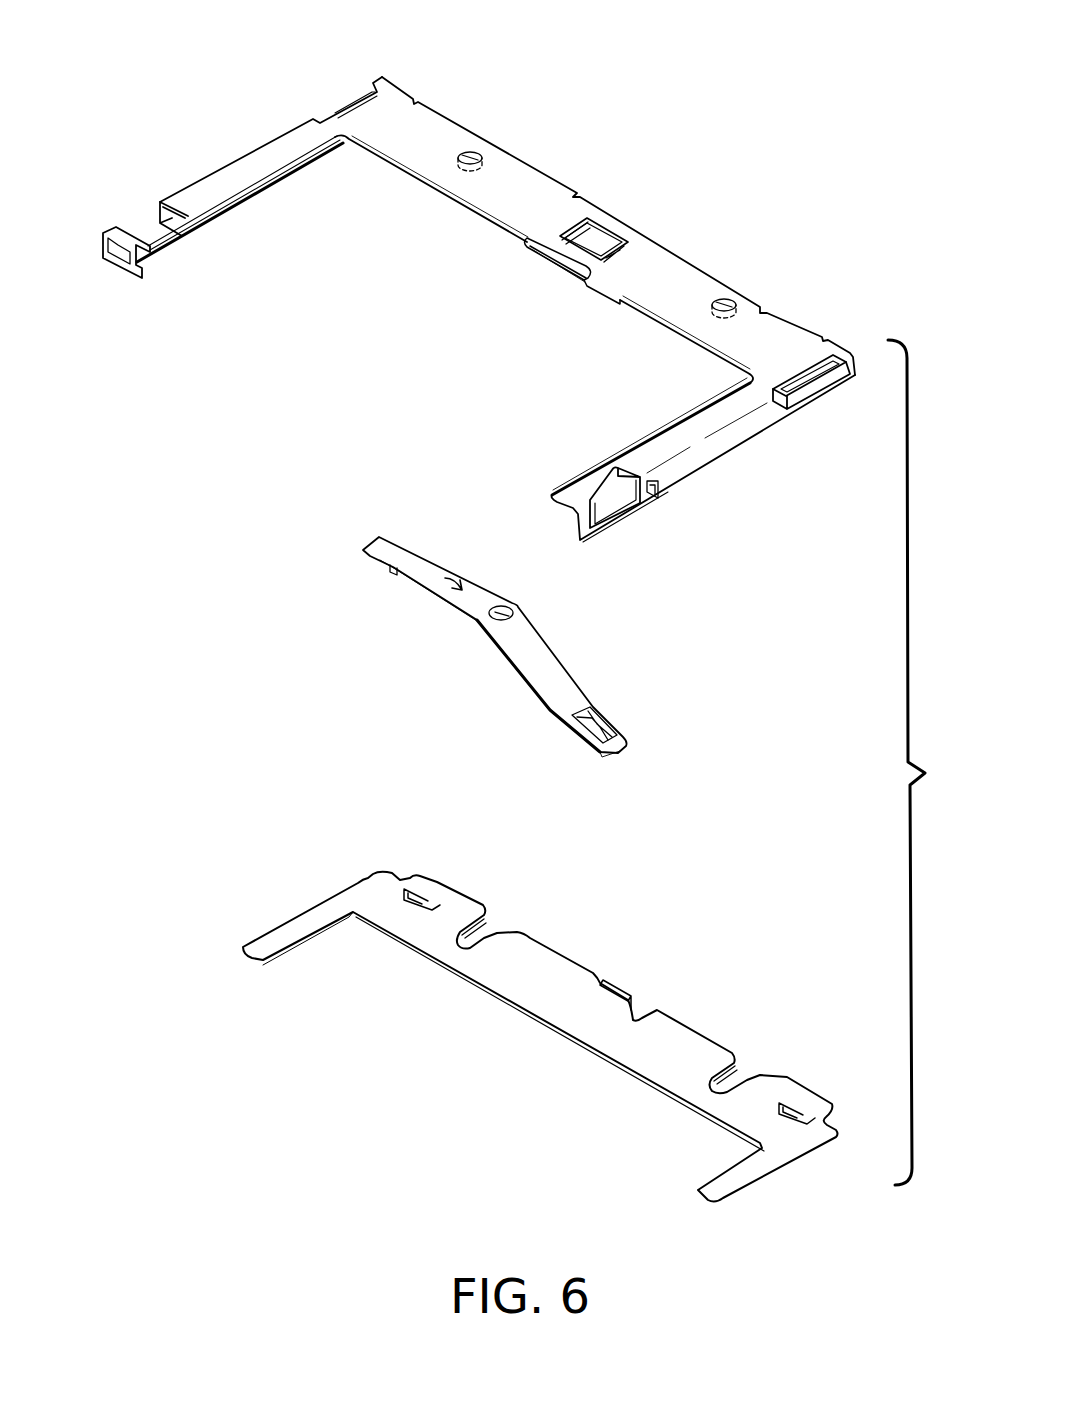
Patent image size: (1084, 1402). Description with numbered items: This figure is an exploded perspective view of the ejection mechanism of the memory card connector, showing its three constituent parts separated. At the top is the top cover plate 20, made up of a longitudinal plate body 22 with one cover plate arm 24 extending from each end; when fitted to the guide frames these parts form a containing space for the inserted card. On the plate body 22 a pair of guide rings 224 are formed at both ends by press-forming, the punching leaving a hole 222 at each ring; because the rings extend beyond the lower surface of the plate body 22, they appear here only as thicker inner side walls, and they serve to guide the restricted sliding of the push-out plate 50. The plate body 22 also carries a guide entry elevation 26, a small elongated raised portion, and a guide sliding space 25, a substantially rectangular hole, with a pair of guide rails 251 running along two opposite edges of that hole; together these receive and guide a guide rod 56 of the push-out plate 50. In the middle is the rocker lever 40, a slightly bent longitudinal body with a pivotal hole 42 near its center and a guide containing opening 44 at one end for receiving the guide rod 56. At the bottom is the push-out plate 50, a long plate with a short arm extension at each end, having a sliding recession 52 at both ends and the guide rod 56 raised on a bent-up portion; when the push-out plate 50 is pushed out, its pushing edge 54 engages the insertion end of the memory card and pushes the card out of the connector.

The top cover plate 20 is at (722, 130).
The plate body 22 is at (503, 160).
The cover plate arm 24 is at (275, 152).
The guide sliding space 25 is at (587, 240).
The guide entry elevation 26 is at (549, 252).
The rocker lever 40 is at (412, 580).
The pivotal hole 42 is at (487, 614).
The guide containing opening 44 is at (607, 733).
The push-out plate 50 is at (732, 975).
The sliding recession 52 is at (487, 928).
The pushing edge 54 is at (420, 900).
The guide rod 56 is at (613, 987).
The hole 222 is at (437, 152).
The guide ring 224 is at (466, 152).
The guide rail 251 is at (570, 233).